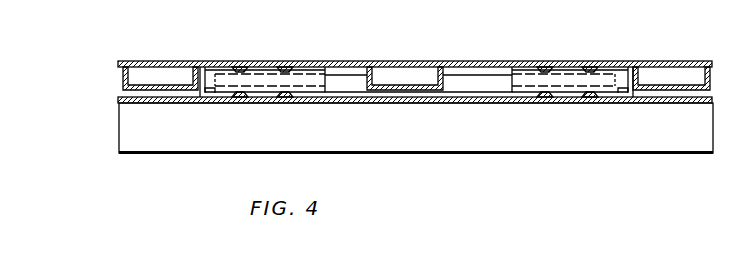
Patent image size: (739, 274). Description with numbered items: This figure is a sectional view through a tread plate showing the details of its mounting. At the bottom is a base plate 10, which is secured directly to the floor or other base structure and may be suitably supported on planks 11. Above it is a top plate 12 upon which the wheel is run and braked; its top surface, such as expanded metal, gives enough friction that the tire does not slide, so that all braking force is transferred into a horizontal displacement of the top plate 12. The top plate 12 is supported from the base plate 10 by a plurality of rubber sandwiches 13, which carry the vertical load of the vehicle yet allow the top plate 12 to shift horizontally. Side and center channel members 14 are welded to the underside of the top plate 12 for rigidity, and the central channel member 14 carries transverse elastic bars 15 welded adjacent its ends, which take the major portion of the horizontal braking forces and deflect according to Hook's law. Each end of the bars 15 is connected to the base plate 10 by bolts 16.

The base plate 10 is at (449, 98).
The planks 11 is at (444, 143).
The top plate 12 is at (471, 61).
The rubber sandwiches 13 is at (213, 78).
The channel members 14 is at (124, 80).
The transverse elastic bars 15 is at (343, 83).
The bolts 16 is at (208, 98).